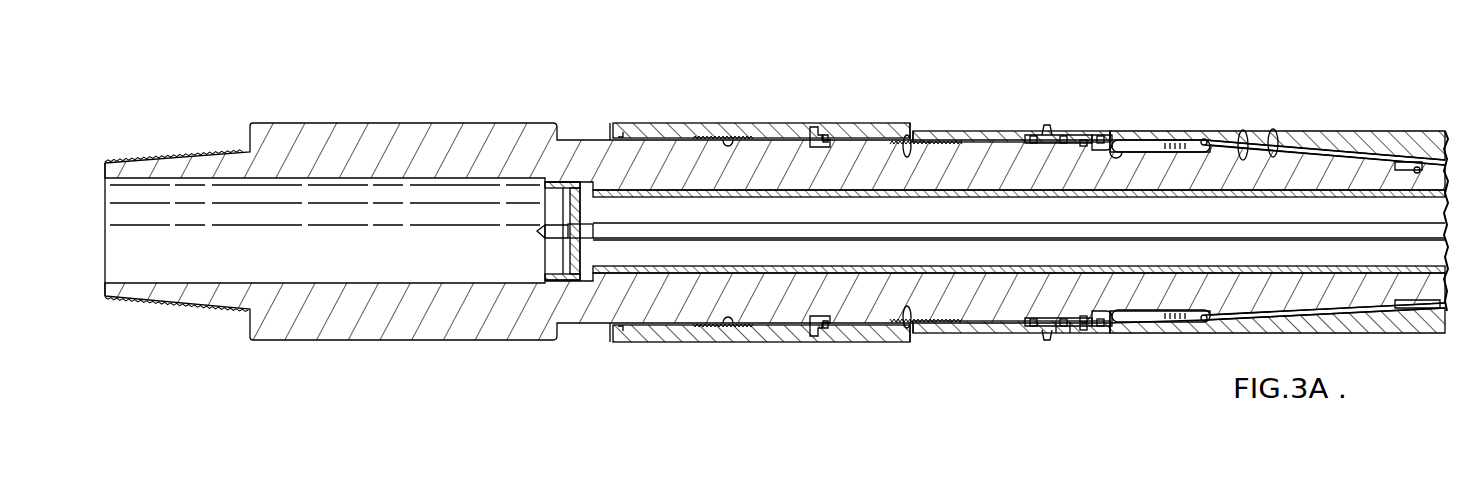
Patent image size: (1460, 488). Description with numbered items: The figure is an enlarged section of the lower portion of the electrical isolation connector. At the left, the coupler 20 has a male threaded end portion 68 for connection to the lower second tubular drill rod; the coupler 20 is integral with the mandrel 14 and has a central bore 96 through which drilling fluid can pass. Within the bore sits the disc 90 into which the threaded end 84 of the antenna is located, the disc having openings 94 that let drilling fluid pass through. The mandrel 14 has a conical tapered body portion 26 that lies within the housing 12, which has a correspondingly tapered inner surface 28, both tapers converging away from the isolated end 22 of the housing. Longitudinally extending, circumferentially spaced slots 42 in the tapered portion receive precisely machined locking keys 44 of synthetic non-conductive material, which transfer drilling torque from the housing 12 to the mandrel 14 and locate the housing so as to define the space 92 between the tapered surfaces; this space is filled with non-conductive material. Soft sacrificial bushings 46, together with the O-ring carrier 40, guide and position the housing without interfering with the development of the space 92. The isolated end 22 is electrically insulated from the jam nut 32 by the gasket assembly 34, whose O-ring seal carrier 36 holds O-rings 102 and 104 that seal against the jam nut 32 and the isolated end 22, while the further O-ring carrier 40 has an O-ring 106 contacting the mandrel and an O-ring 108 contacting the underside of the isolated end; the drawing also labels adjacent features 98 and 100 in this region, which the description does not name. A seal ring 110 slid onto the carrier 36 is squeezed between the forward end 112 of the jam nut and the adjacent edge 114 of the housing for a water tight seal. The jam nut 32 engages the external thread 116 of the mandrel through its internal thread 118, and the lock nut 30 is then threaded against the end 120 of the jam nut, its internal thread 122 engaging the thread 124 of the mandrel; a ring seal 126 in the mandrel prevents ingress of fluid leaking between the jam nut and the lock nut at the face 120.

The housing 12 is at (1323, 136).
The mandrel 14 is at (1213, 178).
The coupler 20 is at (324, 122).
The isolated end of housing 22 is at (1060, 133).
The conical tapered body portion 26 is at (1238, 132).
The conically tapered inner surface 28 is at (1357, 153).
The locking collar 30 is at (697, 128).
The gasket assembly jamming nut 32 is at (947, 130).
The gasket assembly 34 is at (1040, 117).
The first O-ring carrier 36 is at (1048, 318).
The adjacent O-ring carrier 40 is at (1090, 331).
The slots 42 is at (1183, 309).
The locking keys 44 is at (1133, 147).
The sacrificial bushings 46 is at (1417, 161).
The male threaded end portion 68 is at (214, 152).
The threaded end of the antenna 84 is at (552, 228).
The disc 90 is at (567, 186).
The space 92 is at (1276, 130).
The openings 94 is at (548, 272).
The central bore 96 is at (388, 200).
The spring seat 98 is at (1190, 147).
The retainer pin 100 is at (1100, 139).
The O-ring 102 is at (1063, 328).
The O-ring 104 is at (1032, 333).
The O-ring 106 is at (1078, 318).
The O-ring 108 is at (1105, 329).
The seal ring 110 is at (1045, 341).
The forward end of jam nut 112 is at (1033, 137).
The adjacent edge of housing 114 is at (1057, 336).
The external thread 116 is at (909, 150).
The internal thread of jam nut 118 is at (898, 137).
The end of jam nut 120 is at (823, 127).
The internal thread of lock nut 122 is at (710, 136).
The thread of mandrel 124 is at (733, 143).
The ring seal 126 is at (817, 323).